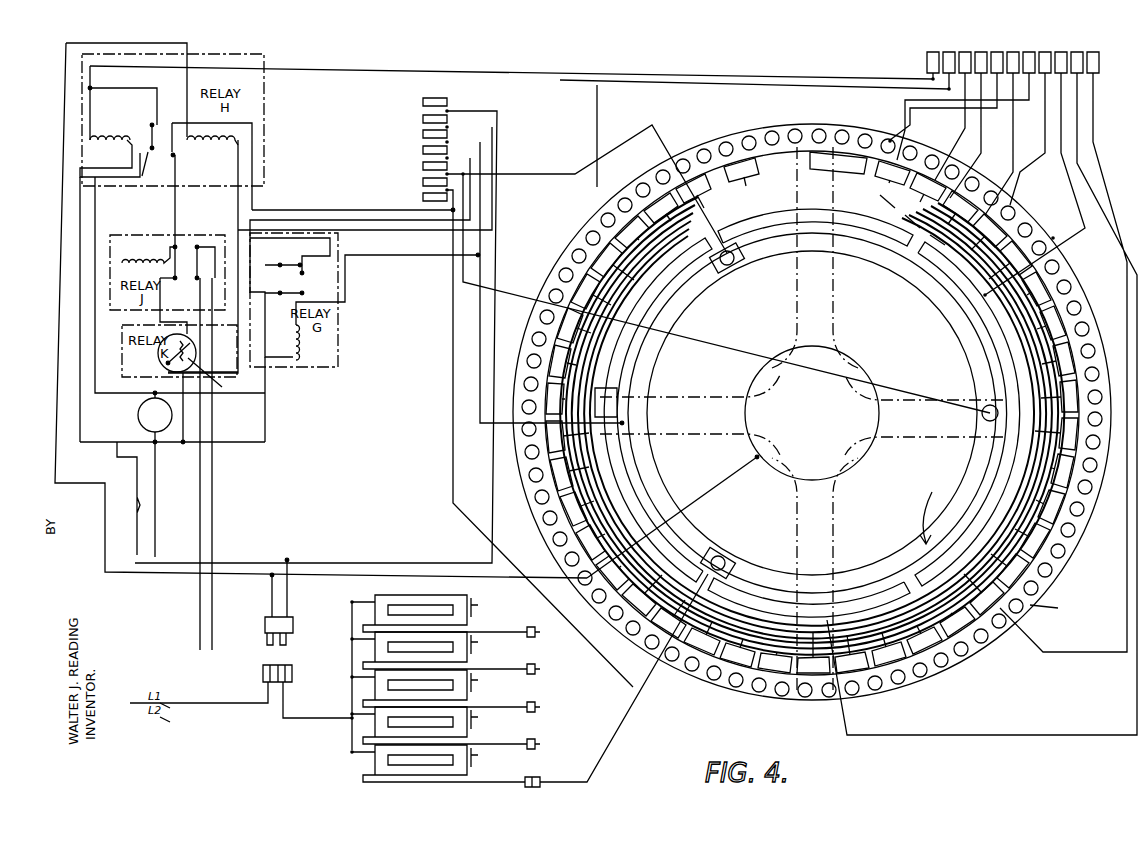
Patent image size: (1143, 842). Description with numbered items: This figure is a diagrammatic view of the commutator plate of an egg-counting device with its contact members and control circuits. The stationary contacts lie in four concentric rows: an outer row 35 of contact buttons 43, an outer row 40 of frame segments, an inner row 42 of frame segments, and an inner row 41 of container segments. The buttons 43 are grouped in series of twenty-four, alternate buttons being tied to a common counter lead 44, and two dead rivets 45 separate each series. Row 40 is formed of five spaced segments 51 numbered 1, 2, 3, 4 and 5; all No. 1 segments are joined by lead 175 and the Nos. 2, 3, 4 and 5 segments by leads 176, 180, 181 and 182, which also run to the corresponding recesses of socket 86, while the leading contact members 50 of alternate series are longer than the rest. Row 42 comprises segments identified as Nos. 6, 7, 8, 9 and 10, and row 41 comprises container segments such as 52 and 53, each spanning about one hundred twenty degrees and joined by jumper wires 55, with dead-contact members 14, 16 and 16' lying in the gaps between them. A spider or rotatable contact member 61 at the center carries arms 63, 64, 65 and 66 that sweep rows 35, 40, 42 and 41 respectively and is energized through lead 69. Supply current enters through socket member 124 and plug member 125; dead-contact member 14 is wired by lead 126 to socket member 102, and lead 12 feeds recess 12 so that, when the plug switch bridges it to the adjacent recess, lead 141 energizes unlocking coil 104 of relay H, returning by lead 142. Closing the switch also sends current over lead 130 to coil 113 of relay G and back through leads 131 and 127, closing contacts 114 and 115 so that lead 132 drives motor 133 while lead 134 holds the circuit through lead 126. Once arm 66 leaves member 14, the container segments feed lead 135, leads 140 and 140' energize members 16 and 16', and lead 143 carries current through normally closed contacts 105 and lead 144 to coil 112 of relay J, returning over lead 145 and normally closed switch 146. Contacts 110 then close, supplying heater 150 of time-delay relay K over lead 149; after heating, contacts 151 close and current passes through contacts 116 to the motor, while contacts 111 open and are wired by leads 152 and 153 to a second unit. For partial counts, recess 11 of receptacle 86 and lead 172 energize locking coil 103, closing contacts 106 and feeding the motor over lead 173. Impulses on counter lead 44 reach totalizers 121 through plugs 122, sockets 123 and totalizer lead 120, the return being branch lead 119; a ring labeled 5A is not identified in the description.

The No. 1 frame segment 1 is at (587, 233).
The No. 2 frame segment 2 is at (620, 199).
The No. 3 frame segment 3 is at (659, 171).
The No. 4 frame segment 4 is at (701, 149).
The No. 5 frame segment 5 is at (747, 135).
The No. 6 frame segment 6 is at (795, 128).
The No. 7 frame segment 7 is at (843, 129).
The No. 8 frame segment 8 is at (890, 138).
The No. 9 frame segment 9 is at (935, 155).
The No. 10 frame segment 10 is at (977, 178).
The recess 11 is at (1014, 208).
The lead 12 is at (505, 121).
The ring 5A is at (933, 295).
The dead-contact member 14 is at (980, 418).
The dead-contact member 16 is at (732, 549).
The dead-contact member 16' is at (745, 263).
The outer row of contact members 35 is at (1052, 608).
The outer row of frame segments 40 is at (1082, 530).
The inner row of container segments 41 is at (880, 575).
The inner row of frame segments 42 is at (692, 582).
The contact buttons 43 is at (745, 155).
The common counter lead 44 is at (975, 667).
The dead rivets 45 is at (563, 268).
The contact members 50 is at (835, 175).
The segments 51 is at (748, 170).
The container segment 52 is at (945, 530).
The container segment 53 is at (660, 487).
The jumper wires 55 is at (728, 270).
The spider 61 is at (853, 462).
The spider arm 63 is at (824, 545).
The spider arm 64 is at (832, 316).
The spider arm 65 is at (688, 372).
The spider arm 66 is at (960, 395).
The lead 69 is at (700, 507).
The socket 86 is at (1103, 70).
The socket member 102 is at (445, 96).
The locking coil 103 is at (118, 128).
The unlocking coil 104 is at (225, 128).
The normally closed contacts 105 is at (178, 160).
The normally open contacts 106 is at (146, 162).
The normally open contacts 110 is at (174, 306).
The normally closed contacts 111 is at (188, 284).
The coil 112 is at (118, 252).
The coil 113 is at (312, 347).
The normally open contacts 114 is at (306, 273).
The normally open contacts 115 is at (304, 296).
The normally closed contacts 116 is at (290, 262).
The branch lead 119 is at (352, 604).
The totalizer lead 120 is at (640, 730).
The totalizer 121 is at (435, 603).
The plug 122 is at (530, 618).
The socket 123 is at (540, 776).
The socket member 124 is at (263, 673).
The plug member 125 is at (265, 625).
The lead 126 is at (726, 293).
The lead 127 is at (155, 533).
The lead 130 is at (352, 220).
The lead 131 is at (277, 410).
The lead 132 is at (252, 340).
The motor 133 is at (140, 405).
The lead 134 is at (428, 258).
The lead 135 is at (470, 322).
The lead 140 is at (525, 438).
The lead 140' is at (587, 189).
The lead 141 is at (500, 148).
The lead 142 is at (57, 340).
The lead 143 is at (353, 202).
The lead 144 is at (176, 220).
The lead 145 is at (118, 430).
The switch 146 is at (135, 508).
The lead 149 is at (157, 294).
The heater coil 150 is at (201, 364).
The contacts 151 is at (162, 368).
The lead 152 is at (201, 477).
The lead 153 is at (213, 488).
The lead 172 is at (511, 70).
The lead 173 is at (100, 212).
The lead 175 is at (862, 178).
The lead 176 is at (879, 198).
The lead 180 is at (914, 218).
The lead 181 is at (932, 235).
The lead 182 is at (985, 315).